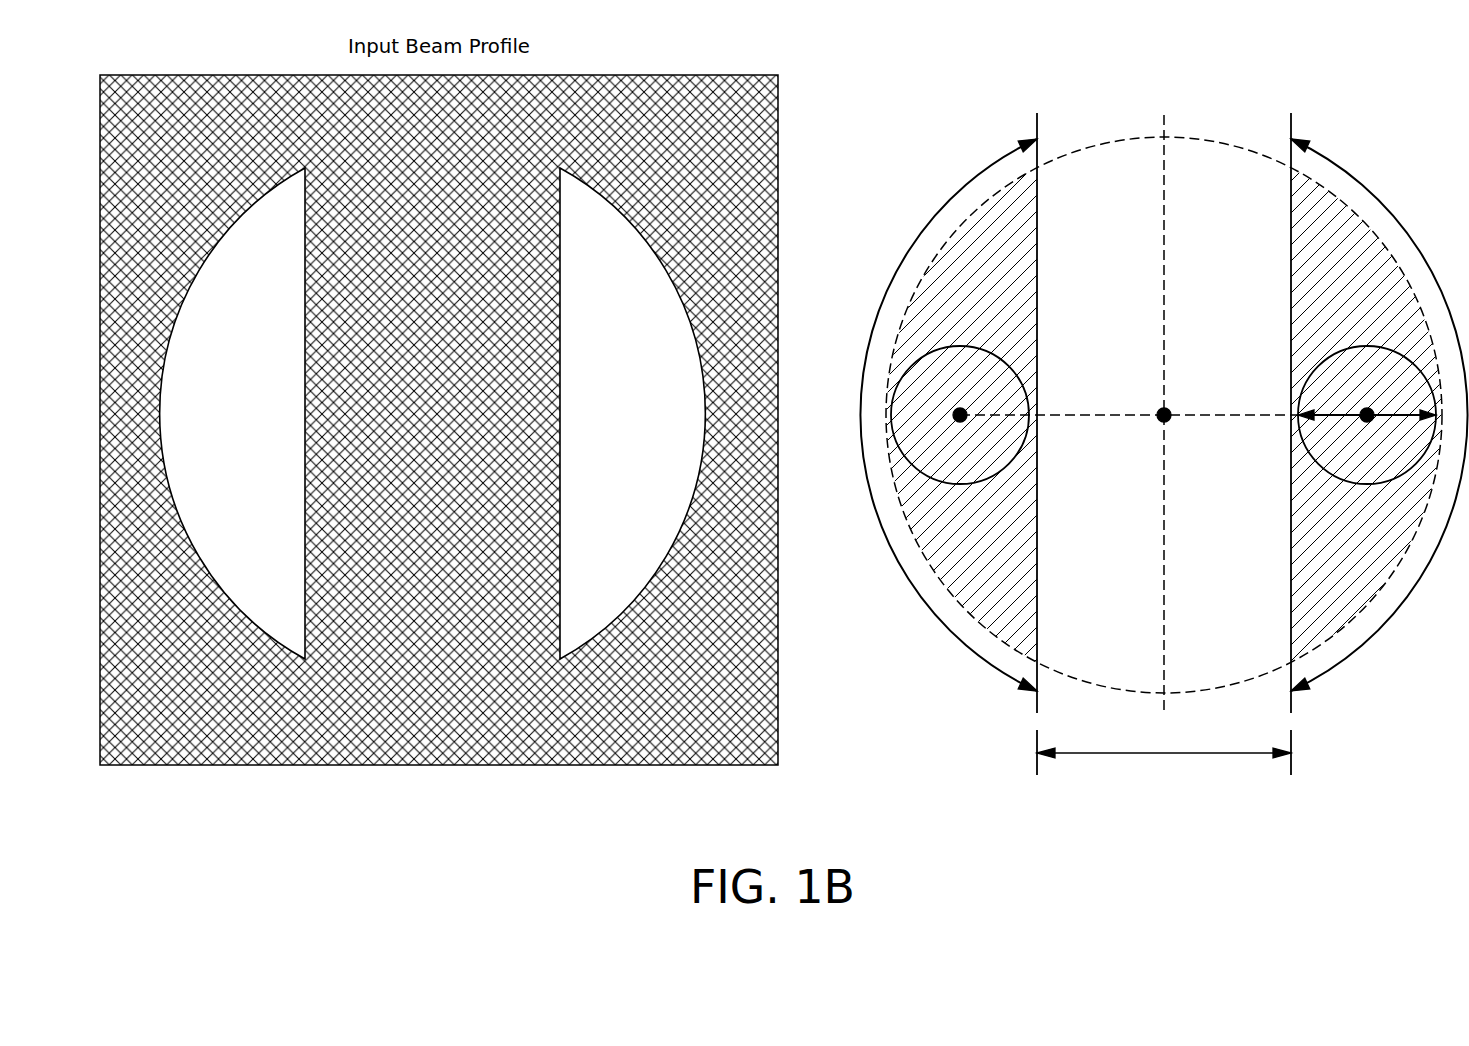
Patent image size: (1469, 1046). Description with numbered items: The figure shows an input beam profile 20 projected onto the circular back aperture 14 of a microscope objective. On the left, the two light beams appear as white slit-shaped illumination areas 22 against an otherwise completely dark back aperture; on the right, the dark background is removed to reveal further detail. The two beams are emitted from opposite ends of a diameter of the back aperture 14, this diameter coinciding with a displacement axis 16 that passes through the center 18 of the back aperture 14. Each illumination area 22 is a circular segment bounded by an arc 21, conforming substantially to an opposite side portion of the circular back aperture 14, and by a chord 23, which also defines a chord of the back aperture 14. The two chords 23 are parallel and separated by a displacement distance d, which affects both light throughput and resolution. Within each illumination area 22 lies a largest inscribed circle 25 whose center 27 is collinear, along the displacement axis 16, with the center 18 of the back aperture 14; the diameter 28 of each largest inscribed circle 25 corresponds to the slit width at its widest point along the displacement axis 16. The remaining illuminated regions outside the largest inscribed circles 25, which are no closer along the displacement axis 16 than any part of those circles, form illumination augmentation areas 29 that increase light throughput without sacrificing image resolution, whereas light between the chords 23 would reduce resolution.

The back aperture 14 is at (1207, 138).
The displacement axis 16 is at (1102, 411).
The center of back aperture 18 is at (1160, 421).
The input beam profile 20 is at (830, 63).
The arcs 21 is at (905, 572).
The illumination areas 22 is at (250, 429).
The chords 23 is at (1040, 228).
The largest inscribed circles 25 is at (975, 394).
The centers of largest inscribed circles 27 is at (960, 423).
The diameter of largest inscribed circles 28 is at (1398, 410).
The illumination augmentation areas 29 is at (1002, 290).